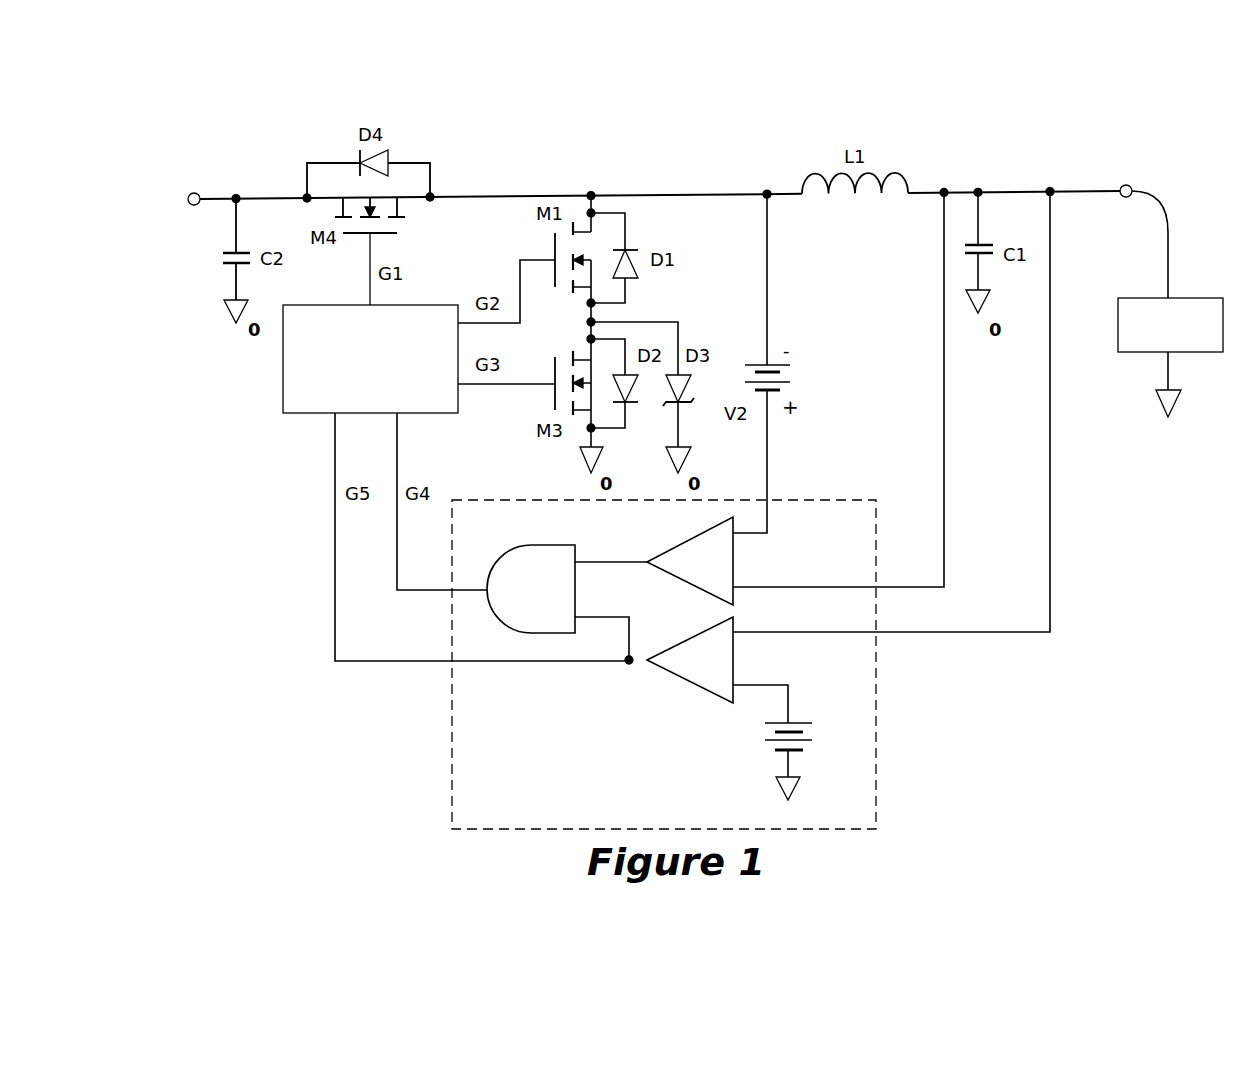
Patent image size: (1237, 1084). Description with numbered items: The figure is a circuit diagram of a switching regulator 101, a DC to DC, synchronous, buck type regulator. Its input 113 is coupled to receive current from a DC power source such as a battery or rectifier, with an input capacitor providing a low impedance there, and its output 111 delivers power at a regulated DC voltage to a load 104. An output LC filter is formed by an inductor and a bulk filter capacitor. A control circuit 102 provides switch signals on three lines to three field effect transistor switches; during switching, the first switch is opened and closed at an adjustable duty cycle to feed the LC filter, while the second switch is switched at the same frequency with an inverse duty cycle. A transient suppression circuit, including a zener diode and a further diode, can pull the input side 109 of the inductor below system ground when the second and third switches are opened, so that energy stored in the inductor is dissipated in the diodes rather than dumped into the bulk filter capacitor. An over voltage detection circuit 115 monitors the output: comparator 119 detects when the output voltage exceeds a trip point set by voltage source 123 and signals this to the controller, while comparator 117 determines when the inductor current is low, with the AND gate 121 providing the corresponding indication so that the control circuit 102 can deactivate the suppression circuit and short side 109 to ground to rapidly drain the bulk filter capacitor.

The regulator 101 is at (660, 143).
The control circuit 102 is at (350, 401).
The load 104 is at (1185, 297).
The input side of inductor L1 109 is at (768, 192).
The output 111 is at (1121, 198).
The input 113 is at (194, 206).
The over voltage detection circuit 115 is at (843, 497).
The comparator 117 is at (680, 576).
The comparator 119 is at (680, 674).
The AND gate U1 121 is at (515, 602).
The voltage source 123 is at (762, 733).